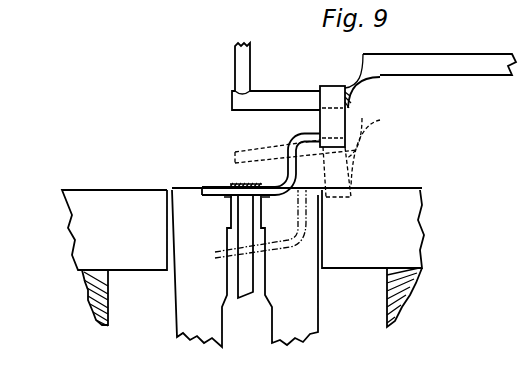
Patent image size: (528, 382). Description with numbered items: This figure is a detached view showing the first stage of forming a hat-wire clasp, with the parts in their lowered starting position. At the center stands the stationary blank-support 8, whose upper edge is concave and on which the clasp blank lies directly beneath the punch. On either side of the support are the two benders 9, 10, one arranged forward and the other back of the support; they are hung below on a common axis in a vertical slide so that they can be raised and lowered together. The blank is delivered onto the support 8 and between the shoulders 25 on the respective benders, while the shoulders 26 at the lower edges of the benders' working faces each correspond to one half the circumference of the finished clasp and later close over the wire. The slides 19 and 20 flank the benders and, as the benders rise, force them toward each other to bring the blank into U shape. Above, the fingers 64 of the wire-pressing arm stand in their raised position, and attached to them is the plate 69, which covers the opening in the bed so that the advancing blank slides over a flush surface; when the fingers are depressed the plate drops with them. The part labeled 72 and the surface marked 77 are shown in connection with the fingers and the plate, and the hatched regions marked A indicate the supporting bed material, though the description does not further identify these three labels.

The post 72 is at (251, 68).
The fingers 64 is at (276, 100).
The plate 69 is at (208, 186).
The hatched bearing surface 77 is at (236, 186).
The slide 19 is at (114, 230).
The slide 20 is at (373, 229).
The bender 9 is at (201, 268).
The bender 10 is at (289, 270).
The blank-support 8 is at (245, 246).
The shoulders 25 is at (229, 197).
The shoulders 26 is at (226, 229).
The hatched support leg A is at (252, 297).